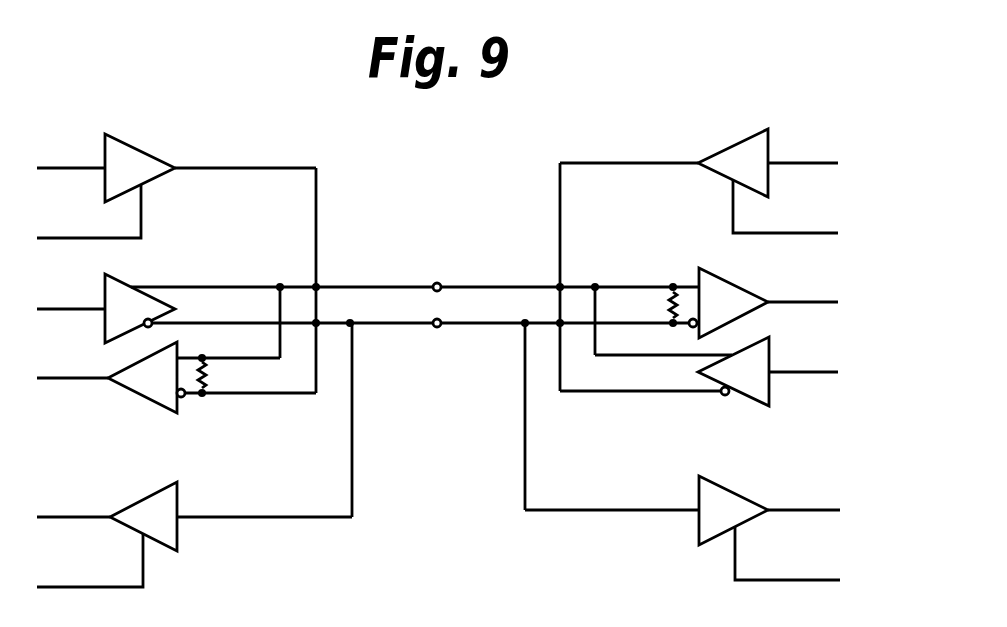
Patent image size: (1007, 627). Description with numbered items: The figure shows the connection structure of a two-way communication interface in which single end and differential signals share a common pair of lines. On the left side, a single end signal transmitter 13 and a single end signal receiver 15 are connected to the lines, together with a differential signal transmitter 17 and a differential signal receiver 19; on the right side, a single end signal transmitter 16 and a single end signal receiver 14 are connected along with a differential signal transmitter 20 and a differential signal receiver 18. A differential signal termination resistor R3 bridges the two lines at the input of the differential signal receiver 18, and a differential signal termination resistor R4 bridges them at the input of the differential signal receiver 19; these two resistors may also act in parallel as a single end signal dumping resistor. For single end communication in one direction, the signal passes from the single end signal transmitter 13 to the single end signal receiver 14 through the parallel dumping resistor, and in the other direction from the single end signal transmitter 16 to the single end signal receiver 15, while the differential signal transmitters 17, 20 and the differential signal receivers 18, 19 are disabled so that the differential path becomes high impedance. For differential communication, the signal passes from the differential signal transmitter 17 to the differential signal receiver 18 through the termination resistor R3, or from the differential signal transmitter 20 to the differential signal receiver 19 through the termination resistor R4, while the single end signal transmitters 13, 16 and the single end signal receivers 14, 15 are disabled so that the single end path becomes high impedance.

The single end signal transmitter 13 is at (140, 147).
The single end signal receiver 14 is at (699, 528).
The single end signal receiver 15 is at (177, 500).
The single end signal transmitter 16 is at (730, 142).
The differential signal transmitter 17 is at (128, 277).
The differential signal receiver 18 is at (707, 263).
The differential signal receiver 19 is at (142, 397).
The differential signal transmitter 20 is at (745, 400).
The differential signal termination resistor R3 is at (649, 304).
The differential signal termination resistor R4 is at (224, 376).